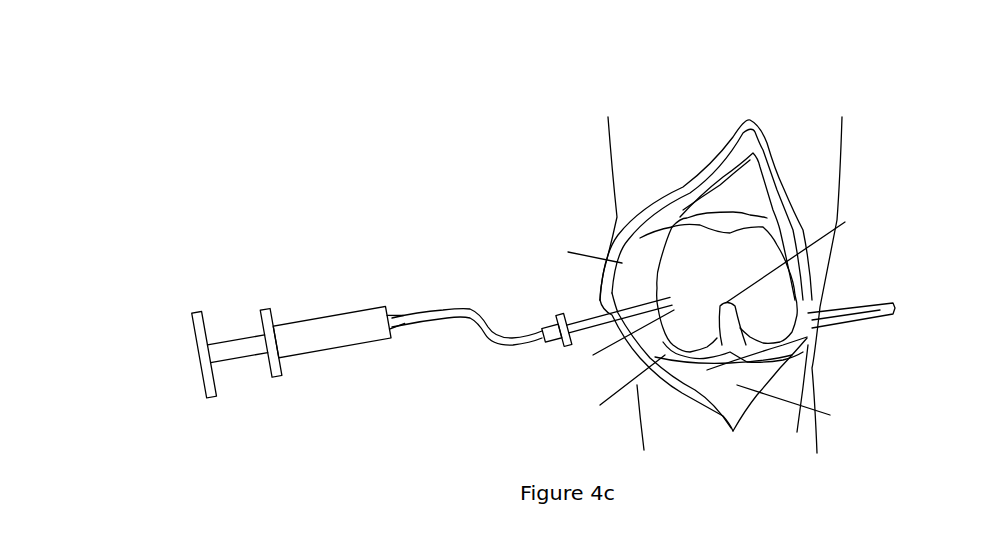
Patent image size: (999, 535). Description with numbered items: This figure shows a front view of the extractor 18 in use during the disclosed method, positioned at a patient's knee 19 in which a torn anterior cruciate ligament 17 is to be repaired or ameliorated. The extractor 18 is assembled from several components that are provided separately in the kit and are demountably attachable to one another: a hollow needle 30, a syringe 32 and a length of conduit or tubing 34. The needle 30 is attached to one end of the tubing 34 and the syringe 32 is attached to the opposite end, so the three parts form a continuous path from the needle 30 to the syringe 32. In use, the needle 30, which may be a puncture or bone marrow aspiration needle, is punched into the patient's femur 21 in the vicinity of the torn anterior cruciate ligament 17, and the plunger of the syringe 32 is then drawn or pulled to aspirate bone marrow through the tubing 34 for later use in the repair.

The anterior cruciate ligament 17 is at (790, 351).
The extractor 18 is at (393, 287).
The knee 19 is at (803, 97).
The femur 21 is at (686, 222).
The hollow needle 30 is at (557, 320).
The syringe 32 is at (277, 372).
The tubing 34 is at (463, 322).